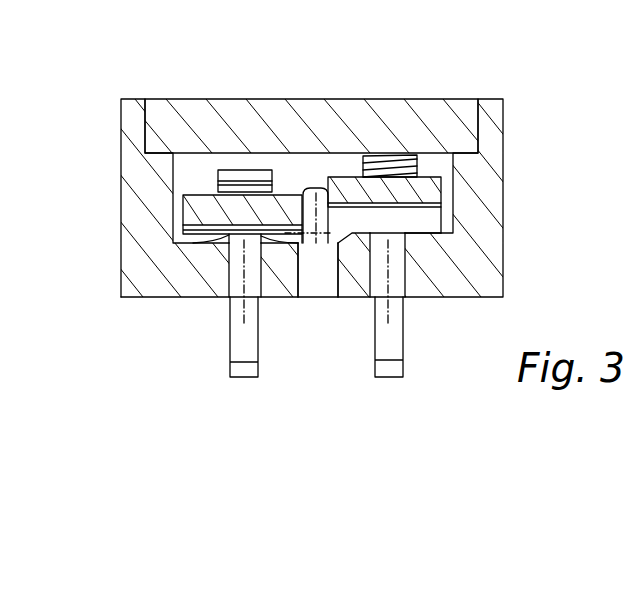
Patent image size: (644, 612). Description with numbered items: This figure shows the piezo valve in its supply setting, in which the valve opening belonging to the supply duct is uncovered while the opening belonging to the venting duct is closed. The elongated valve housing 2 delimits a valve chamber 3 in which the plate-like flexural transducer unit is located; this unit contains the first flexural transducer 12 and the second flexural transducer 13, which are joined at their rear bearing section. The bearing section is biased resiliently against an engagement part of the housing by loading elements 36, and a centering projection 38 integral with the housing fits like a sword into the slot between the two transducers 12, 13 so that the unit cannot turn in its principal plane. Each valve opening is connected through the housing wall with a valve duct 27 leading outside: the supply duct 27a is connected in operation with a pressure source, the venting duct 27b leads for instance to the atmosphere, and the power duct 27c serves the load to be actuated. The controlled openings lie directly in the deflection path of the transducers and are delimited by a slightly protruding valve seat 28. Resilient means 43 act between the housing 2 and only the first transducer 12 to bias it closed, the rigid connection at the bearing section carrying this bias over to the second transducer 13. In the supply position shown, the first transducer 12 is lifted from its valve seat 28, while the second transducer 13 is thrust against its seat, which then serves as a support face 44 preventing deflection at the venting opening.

The valve housing 2 is at (457, 113).
The valve chamber 3 is at (185, 165).
The first flexural transducer 12 is at (345, 185).
The second flexural transducer 13 is at (207, 205).
The valve duct 27 is at (369, 308).
The supply duct 27a is at (398, 273).
The venting duct 27b is at (230, 300).
The power duct 27c is at (312, 278).
The valve seat 28 is at (410, 233).
The loading element 36 is at (245, 173).
The centering projection 38 is at (312, 208).
The resilient means 43 is at (392, 172).
The support face 44 is at (227, 231).